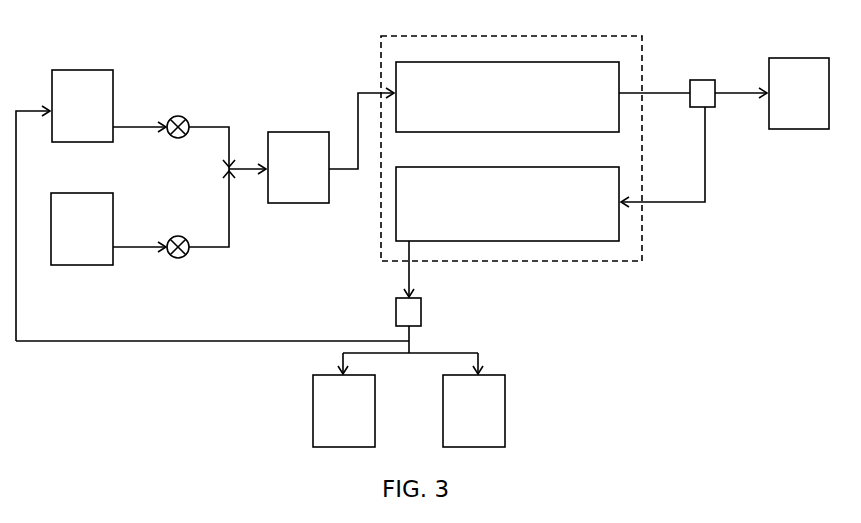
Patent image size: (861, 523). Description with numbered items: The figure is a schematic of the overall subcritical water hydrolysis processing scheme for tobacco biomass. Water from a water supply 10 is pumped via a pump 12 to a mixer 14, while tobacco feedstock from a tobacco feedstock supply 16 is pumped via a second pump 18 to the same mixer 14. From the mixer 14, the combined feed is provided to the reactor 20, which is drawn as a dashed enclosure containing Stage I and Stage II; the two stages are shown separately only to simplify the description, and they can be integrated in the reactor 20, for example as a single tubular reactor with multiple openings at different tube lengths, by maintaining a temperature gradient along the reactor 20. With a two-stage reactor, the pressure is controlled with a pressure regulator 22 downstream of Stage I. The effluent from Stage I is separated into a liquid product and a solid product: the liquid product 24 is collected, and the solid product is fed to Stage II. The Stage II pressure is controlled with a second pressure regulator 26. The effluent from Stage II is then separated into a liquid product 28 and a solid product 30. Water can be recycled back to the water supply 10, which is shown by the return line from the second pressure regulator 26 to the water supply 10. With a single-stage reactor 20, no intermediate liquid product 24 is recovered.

The water supply 10 is at (82, 106).
The pump 12 is at (182, 112).
The mixer 14 is at (298, 167).
The tobacco feedstock supply 16 is at (82, 229).
The pump 18 is at (182, 232).
The reactor 20 is at (381, 61).
The pressure regulator 22 is at (704, 80).
The liquid product 24 is at (799, 93).
The pressure regulator 26 is at (396, 306).
The liquid product 28 is at (344, 411).
The solid product 30 is at (474, 411).